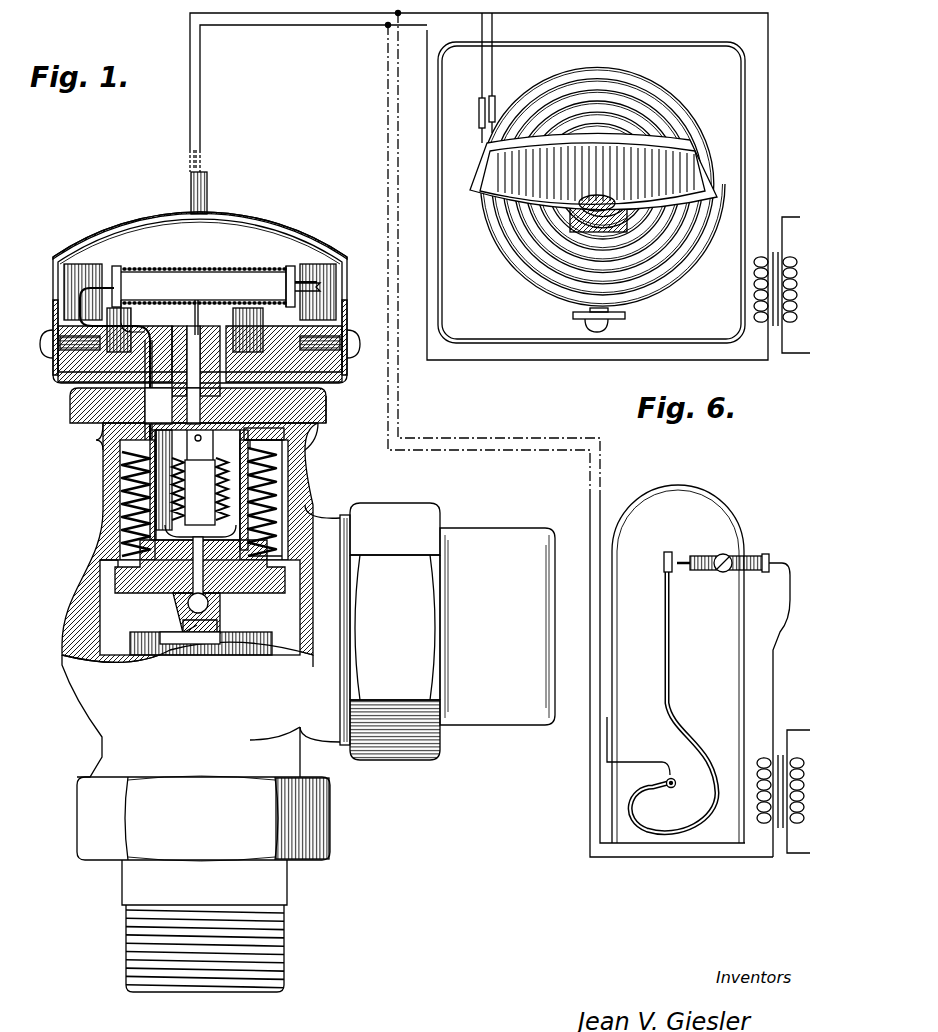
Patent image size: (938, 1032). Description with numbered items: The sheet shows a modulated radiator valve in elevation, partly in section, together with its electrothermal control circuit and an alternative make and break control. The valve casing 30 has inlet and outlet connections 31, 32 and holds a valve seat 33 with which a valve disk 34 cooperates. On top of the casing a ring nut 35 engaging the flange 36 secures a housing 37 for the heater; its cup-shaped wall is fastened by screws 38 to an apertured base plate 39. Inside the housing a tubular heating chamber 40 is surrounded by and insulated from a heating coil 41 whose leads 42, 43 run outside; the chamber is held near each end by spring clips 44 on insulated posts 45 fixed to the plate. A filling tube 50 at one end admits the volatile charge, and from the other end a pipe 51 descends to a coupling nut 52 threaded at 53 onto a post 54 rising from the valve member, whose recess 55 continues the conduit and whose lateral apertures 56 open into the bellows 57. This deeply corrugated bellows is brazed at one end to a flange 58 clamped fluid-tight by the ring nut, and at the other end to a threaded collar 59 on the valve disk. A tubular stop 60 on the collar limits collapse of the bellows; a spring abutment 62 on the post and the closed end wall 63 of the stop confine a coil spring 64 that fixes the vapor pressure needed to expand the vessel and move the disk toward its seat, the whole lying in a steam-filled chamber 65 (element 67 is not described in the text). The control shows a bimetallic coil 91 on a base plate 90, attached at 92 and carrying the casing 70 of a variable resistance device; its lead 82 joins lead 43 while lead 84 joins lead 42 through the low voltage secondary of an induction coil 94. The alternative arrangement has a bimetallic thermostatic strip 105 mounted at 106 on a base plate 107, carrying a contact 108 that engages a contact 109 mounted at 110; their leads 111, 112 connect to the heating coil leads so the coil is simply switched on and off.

In FIG. 1, the valve casing 30 is at (102, 720).
In FIG. 1, the inlet connection 31 is at (495, 720).
In FIG. 1, the outlet connection 32 is at (137, 896).
In FIG. 1, the valve seat 33 is at (273, 632).
In FIG. 1, the valve disk 34 is at (152, 598).
In FIG. 1, the ring nut 35 is at (322, 413).
In FIG. 1, the flange 36 is at (102, 432).
In FIG. 1, the housing 37 is at (268, 222).
In FIG. 1, the screws 38 is at (350, 340).
In FIG. 1, the base plate 39 is at (74, 372).
In FIG. 1, the heating chamber 40 is at (196, 294).
In FIG. 1, the heating coil 41 is at (148, 270).
In FIG. 1, the lead 42 is at (207, 115).
In FIG. 1, the lead 43 is at (190, 115).
In FIG. 1, the spring clips 44 is at (290, 272).
In FIG. 1, the insulated posts 45 is at (262, 328).
In FIG. 1, the filling tube 50 is at (97, 285).
In FIG. 1, the pipe 51 is at (306, 286).
In FIG. 1, the coupling nut 52 is at (224, 354).
In FIG. 1, the threaded attachment 53 is at (180, 392).
In FIG. 1, the post 54 is at (195, 513).
In FIG. 1, the recess 55 is at (200, 492).
In FIG. 1, the lateral apertures 56 is at (200, 453).
In FIG. 1, the bellows 57 is at (274, 472).
In FIG. 1, the flange 58 is at (103, 450).
In FIG. 1, the threaded collar 59 is at (250, 562).
In FIG. 1, the tubular stop 60 is at (130, 522).
In FIG. 1, the spring abutment 62 is at (270, 543).
In FIG. 1, the closed end wall 63 is at (264, 446).
In FIG. 1, the coil spring 64 is at (256, 500).
In FIG. 1, the chamber 65 is at (118, 567).
In FIG. 1, the cap 67 is at (264, 435).
In FIG. 1, the casing of variable resistance device 70 is at (680, 205).
In FIG. 1, the lead 82 is at (482, 112).
In FIG. 1, the lead 84 is at (495, 102).
In FIG. 1, the base plate 90 is at (700, 52).
In FIG. 1, the bimetallic coil 91 is at (608, 70).
In FIG. 1, the attachment point 92 is at (597, 332).
In FIG. 1, the induction coil 94 is at (754, 287).
In FIG. 6, the bimetallic thermostatic strip 105 is at (672, 705).
In FIG. 6, the mounting 106 is at (671, 788).
In FIG. 6, the base plate 107 is at (727, 625).
In FIG. 6, the contact 108 is at (676, 553).
In FIG. 6, the contact 109 is at (683, 571).
In FIG. 6, the mounting 110 is at (745, 555).
In FIG. 6, the lead 111 is at (612, 718).
In FIG. 6, the lead 112 is at (774, 690).